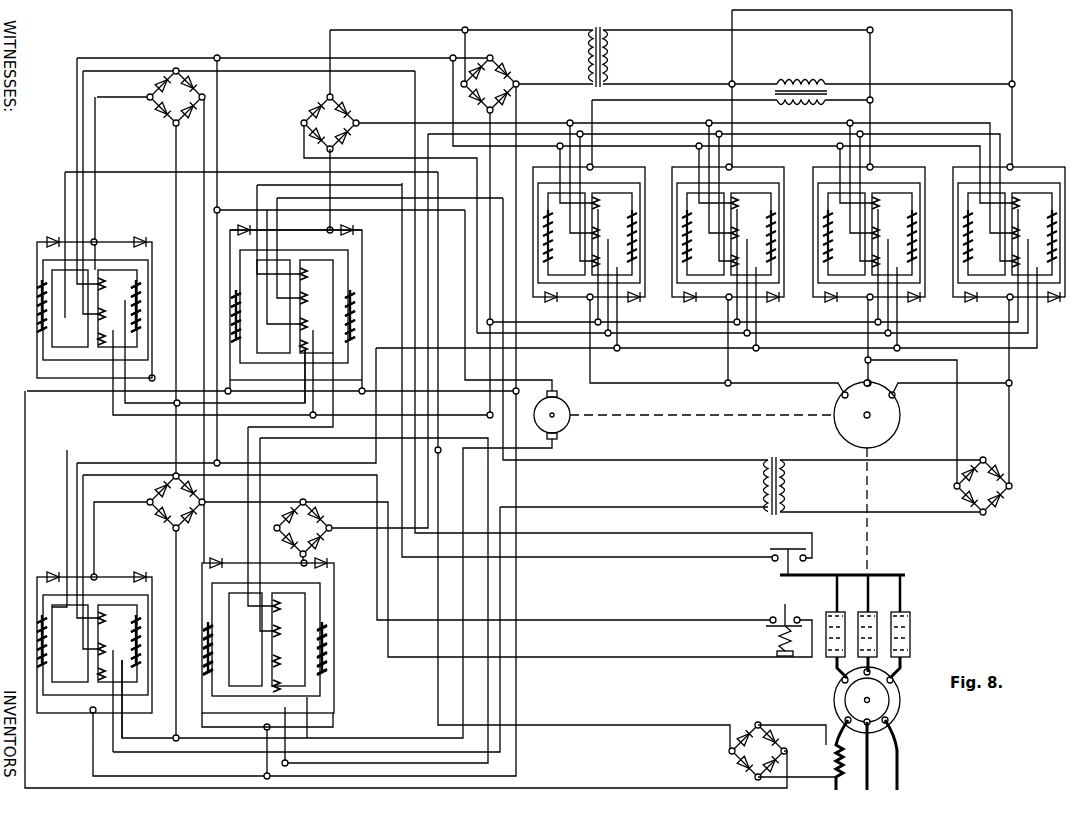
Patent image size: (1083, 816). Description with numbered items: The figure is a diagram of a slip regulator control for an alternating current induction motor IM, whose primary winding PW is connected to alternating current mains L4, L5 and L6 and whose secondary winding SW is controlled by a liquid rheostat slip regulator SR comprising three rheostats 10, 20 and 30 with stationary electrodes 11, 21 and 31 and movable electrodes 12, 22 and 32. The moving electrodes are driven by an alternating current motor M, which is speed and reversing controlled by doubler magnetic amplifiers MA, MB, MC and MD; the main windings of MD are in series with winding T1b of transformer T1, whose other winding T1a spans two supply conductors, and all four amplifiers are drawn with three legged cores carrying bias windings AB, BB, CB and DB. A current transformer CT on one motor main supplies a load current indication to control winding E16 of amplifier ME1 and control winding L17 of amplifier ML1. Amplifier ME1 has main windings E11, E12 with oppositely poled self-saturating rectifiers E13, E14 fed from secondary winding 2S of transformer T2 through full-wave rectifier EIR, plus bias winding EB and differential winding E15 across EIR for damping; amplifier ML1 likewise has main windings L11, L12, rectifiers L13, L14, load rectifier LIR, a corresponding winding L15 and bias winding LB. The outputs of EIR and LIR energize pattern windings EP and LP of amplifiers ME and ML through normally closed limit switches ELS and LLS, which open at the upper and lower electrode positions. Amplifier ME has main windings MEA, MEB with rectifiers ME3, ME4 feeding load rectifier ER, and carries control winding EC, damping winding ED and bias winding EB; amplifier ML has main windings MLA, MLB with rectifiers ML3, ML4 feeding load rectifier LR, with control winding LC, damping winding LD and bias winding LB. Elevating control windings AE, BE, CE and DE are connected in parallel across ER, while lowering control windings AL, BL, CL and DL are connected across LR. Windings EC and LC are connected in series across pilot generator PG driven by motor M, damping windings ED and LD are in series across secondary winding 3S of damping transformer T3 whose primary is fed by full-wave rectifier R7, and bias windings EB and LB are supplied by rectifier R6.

The transformer T2 is at (595, 46).
The secondary winding of transformer T2 2S is at (579, 67).
The transformer T1 is at (813, 92).
The winding of transformer T1 T1a is at (801, 72).
The winding of transformer T1 T1b is at (801, 112).
The damping transformer T3 is at (779, 474).
The secondary winding of damping transformer T3 3S is at (758, 494).
The full-wave rectifier EIR is at (162, 97).
The full-wave load rectifier ER is at (329, 154).
The full-wave rectifier R6 is at (494, 81).
The full-wave rectifier R7 is at (996, 486).
The full-wave rectifier LIR is at (158, 502).
The full-wave load rectifier LR is at (311, 527).
The current transformer CT is at (776, 751).
The doubler magnetic amplifier MD is at (591, 224).
The control winding of amplifier MD DL is at (606, 206).
The control winding of amplifier MD DE is at (577, 237).
The winding DB is at (575, 263).
The doubler magnetic amplifier MC is at (729, 224).
The control winding of amplifier MC CL is at (744, 206).
The control winding of amplifier MC CE is at (716, 237).
The winding CB is at (714, 263).
The doubler magnetic amplifier MB is at (870, 224).
The control winding of amplifier MB BL is at (885, 206).
The control winding of amplifier MB BE is at (857, 237).
The winding BB is at (855, 263).
The doubler magnetic amplifier MA is at (1009, 224).
The control winding of amplifier MA AL is at (1025, 206).
The control winding of amplifier MA AE is at (997, 237).
The winding AB is at (995, 263).
The magnetic amplifier ME is at (302, 305).
The self-saturating rectifier ME3 is at (292, 214).
The self-saturating rectifier ME4 is at (366, 221).
The control winding of amplifier ME EC is at (315, 274).
The damping winding of amplifier ME ED is at (315, 296).
The bias winding EB is at (185, 320).
The pattern winding of amplifier ME EP is at (281, 348).
The main winding of amplifier ME MEB is at (372, 316).
The main winding of amplifier ME MEA is at (238, 340).
The magnetic amplifier ME1 is at (94, 297).
The self-saturating rectifier E13 is at (42, 232).
The self-saturating rectifier E14 is at (151, 232).
The differential winding E15 is at (115, 287).
The control winding of amplifier ME1 E16 is at (81, 339).
The main winding of amplifier ME1 E11 is at (26, 306).
The main winding of amplifier ME1 E12 is at (156, 306).
The magnetic amplifier ML is at (284, 645).
The self-saturating rectifier ML3 is at (218, 552).
The self-saturating rectifier ML4 is at (339, 553).
The control winding of amplifier ML LC is at (287, 608).
The damping winding of amplifier ML LD is at (287, 631).
The bias winding LB is at (172, 652).
The pattern winding of amplifier ML LP is at (254, 682).
The main winding of amplifier ML MLB is at (345, 650).
The main winding of amplifier ML MLA is at (210, 672).
The magnetic amplifier ML1 is at (94, 631).
The self-saturating rectifier L13 is at (42, 566).
The self-saturating rectifier L14 is at (150, 566).
The winding L15 is at (114, 621).
The control winding of amplifier ML1 L17 is at (81, 673).
The main winding of amplifier ML1 L11 is at (24, 633).
The main winding of amplifier ML1 L12 is at (155, 641).
The pilot generator PG is at (565, 413).
The alternating current motor M is at (876, 414).
The induction motor IM is at (878, 700).
The primary winding PW is at (845, 700).
The secondary winding SW is at (897, 694).
The alternating current main L6 is at (846, 759).
The alternating current main L5 is at (878, 760).
The alternating current main L4 is at (903, 759).
The limit switch ELS is at (772, 565).
The limit switch LLS is at (769, 628).
The slip regulator SR is at (848, 562).
The movable electrode 32 is at (820, 593).
The liquid rheostat 30 is at (855, 593).
The movable electrode 12 is at (919, 593).
The movable electrode 22 is at (892, 615).
The liquid rheostat 20 is at (876, 623).
The liquid rheostat 10 is at (919, 621).
The stationary electrode 11 is at (883, 642).
The stationary electrode 31 is at (816, 646).
The stationary electrode 21 is at (857, 652).